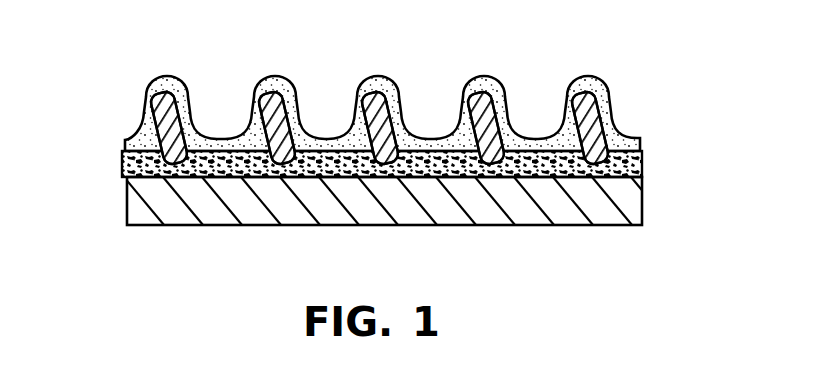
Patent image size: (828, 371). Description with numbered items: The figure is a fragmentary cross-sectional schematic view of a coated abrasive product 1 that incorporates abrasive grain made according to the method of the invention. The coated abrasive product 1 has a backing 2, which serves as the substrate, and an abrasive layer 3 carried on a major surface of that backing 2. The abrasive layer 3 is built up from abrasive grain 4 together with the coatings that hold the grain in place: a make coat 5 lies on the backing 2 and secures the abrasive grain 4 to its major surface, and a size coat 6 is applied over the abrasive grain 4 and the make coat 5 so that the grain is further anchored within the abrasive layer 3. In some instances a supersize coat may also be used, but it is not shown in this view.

The coated abrasive product 1 is at (370, 137).
The backing 2 is at (218, 212).
The abrasive layer 3 is at (390, 97).
The abrasive grain 4 is at (272, 107).
The make coat 5 is at (121, 167).
The size coat 6 is at (140, 132).